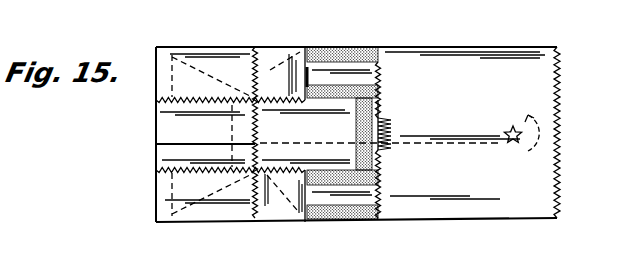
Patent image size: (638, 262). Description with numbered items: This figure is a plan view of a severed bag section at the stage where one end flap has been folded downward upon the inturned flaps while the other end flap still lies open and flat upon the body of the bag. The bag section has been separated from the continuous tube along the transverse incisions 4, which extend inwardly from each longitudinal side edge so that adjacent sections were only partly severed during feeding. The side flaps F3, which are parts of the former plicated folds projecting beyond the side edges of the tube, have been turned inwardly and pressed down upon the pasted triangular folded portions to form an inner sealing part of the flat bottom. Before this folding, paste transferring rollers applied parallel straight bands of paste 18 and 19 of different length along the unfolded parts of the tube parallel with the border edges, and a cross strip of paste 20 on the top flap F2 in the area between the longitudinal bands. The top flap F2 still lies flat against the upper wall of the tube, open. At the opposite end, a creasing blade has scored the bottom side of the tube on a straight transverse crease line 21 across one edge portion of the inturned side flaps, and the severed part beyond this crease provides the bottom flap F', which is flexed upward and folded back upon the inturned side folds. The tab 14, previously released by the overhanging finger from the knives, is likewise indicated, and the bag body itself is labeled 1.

The body 1 is at (356, 134).
The incisions 4 is at (561, 60).
The tab 14 is at (392, 142).
The band of paste 18 is at (365, 50).
The band of paste 19 is at (378, 94).
The cross strip of paste 20 is at (387, 119).
The crease line 21 is at (156, 123).
The bottom flap F' is at (230, 118).
The top flap F2 is at (333, 72).
The side flaps F3 is at (279, 50).